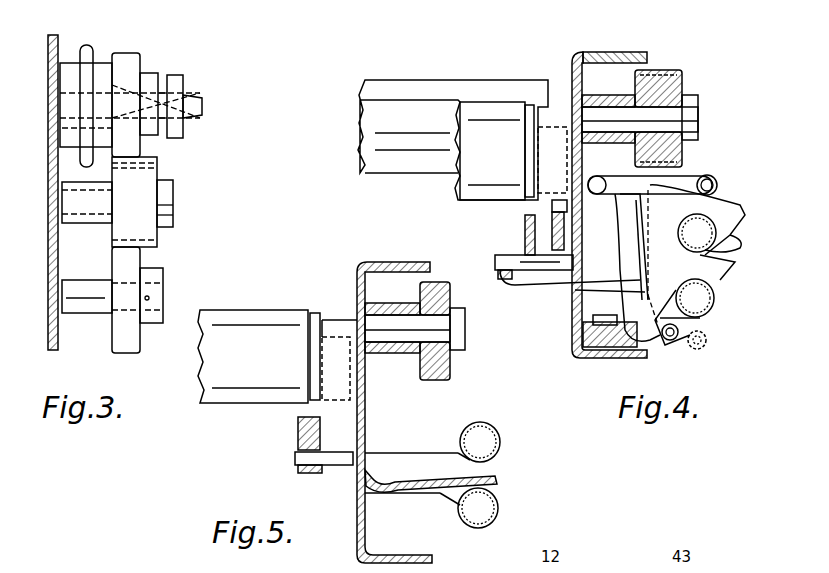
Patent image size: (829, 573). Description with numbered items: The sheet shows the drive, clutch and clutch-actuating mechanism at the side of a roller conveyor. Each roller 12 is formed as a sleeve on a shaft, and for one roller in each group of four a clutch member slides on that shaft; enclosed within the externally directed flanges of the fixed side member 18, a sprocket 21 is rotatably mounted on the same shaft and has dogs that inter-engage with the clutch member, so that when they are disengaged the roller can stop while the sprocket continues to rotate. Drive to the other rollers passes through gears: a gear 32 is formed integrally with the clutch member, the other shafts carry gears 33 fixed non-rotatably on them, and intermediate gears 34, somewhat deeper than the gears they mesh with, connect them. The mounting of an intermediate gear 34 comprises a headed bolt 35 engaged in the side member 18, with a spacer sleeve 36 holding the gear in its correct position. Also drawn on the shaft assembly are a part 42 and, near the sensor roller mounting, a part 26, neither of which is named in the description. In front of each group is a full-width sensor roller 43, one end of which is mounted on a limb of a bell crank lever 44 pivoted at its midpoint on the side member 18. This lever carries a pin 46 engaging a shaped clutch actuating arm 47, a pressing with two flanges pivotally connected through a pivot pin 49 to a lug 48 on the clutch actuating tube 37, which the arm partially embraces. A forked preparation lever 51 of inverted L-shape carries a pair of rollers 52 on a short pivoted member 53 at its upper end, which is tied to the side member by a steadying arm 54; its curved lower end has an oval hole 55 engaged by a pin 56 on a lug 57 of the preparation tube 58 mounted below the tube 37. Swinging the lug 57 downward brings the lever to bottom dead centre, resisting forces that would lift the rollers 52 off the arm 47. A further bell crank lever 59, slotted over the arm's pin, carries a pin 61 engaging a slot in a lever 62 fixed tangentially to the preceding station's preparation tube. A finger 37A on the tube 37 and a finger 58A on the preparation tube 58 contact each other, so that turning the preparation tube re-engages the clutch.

In FIG. 4, the roller 12 is at (490, 180).
In FIG. 4, the side member 18 is at (611, 52).
In FIG. 3, the sprocket 21 is at (86, 45).
In FIG. 4, the screw 26 is at (585, 214).
In FIG. 3, the gear 32 is at (124, 70).
In FIG. 3, the gear 33 is at (124, 330).
In FIG. 3, the intermediate gear 34 is at (148, 178).
In FIG. 4, the intermediate gear 34 is at (660, 72).
In FIG. 5, the intermediate gear 34 is at (448, 365).
In FIG. 4, the headed bolt 35 is at (575, 75).
In FIG. 5, the headed bolt 35 is at (405, 328).
In FIG. 3, the spacer sleeve 36 is at (168, 228).
In FIG. 4, the spacer sleeve 36 is at (600, 100).
In FIG. 5, the spacer sleeve 36 is at (375, 353).
In FIG. 4, the tube 37 is at (712, 230).
In FIG. 5, the tube 37 is at (484, 422).
In FIG. 4, the finger 37A is at (712, 300).
In FIG. 3, the nut 42 is at (162, 73).
In FIG. 4, the sensor roller 43 is at (412, 90).
In FIG. 4, the bell crank lever 44 is at (524, 222).
In FIG. 4, the pin 46 is at (548, 268).
In FIG. 4, the shaped clutch actuating arm 47 is at (700, 208).
In FIG. 4, the lug 48 is at (708, 268).
In FIG. 4, the pivot pin 49 is at (722, 254).
In FIG. 4, the preparation lever 51 is at (583, 310).
In FIG. 4, the rollers 52 is at (717, 181).
In FIG. 4, the pivoted member 53 is at (690, 183).
In FIG. 4, the steadying arm 54 is at (632, 185).
In FIG. 4, the oval hole 55 is at (692, 349).
In FIG. 4, the pin 56 is at (668, 341).
In FIG. 4, the lug 57 is at (655, 310).
In FIG. 4, the preparation tube 58 is at (700, 315).
In FIG. 5, the preparation tube 58 is at (458, 512).
In FIG. 4, the finger 58A is at (705, 312).
In FIG. 4, the bell crank lever 59 is at (508, 280).
In FIG. 5, the bell crank lever 59 is at (298, 436).
In FIG. 5, the pin 61 is at (330, 460).
In FIG. 5, the lever 62 is at (372, 483).